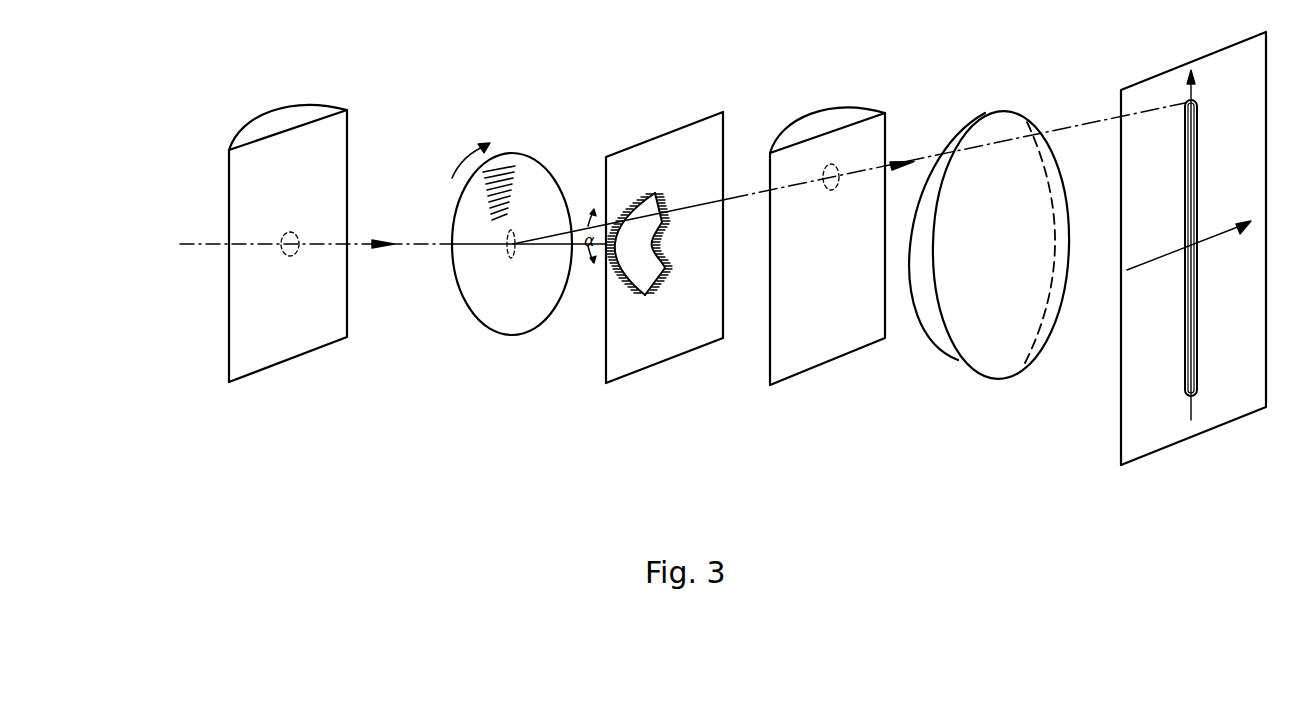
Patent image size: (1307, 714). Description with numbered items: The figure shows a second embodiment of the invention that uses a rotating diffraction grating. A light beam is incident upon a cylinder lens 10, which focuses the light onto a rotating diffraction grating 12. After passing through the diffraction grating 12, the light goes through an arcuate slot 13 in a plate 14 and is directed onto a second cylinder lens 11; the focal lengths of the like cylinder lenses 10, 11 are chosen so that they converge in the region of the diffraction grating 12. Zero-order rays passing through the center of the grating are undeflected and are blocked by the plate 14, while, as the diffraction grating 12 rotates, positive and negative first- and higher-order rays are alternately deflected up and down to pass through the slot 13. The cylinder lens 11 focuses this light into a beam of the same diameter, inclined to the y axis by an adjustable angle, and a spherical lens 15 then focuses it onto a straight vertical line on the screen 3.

The cylinder lens 10 is at (303, 356).
The rotating diffraction grating 12 is at (510, 337).
The arcuate slot 13 is at (652, 196).
The plate 14 is at (655, 360).
The cylinder lens 11 is at (840, 357).
The spherical lens 15 is at (996, 376).
The screen 3 is at (1215, 285).